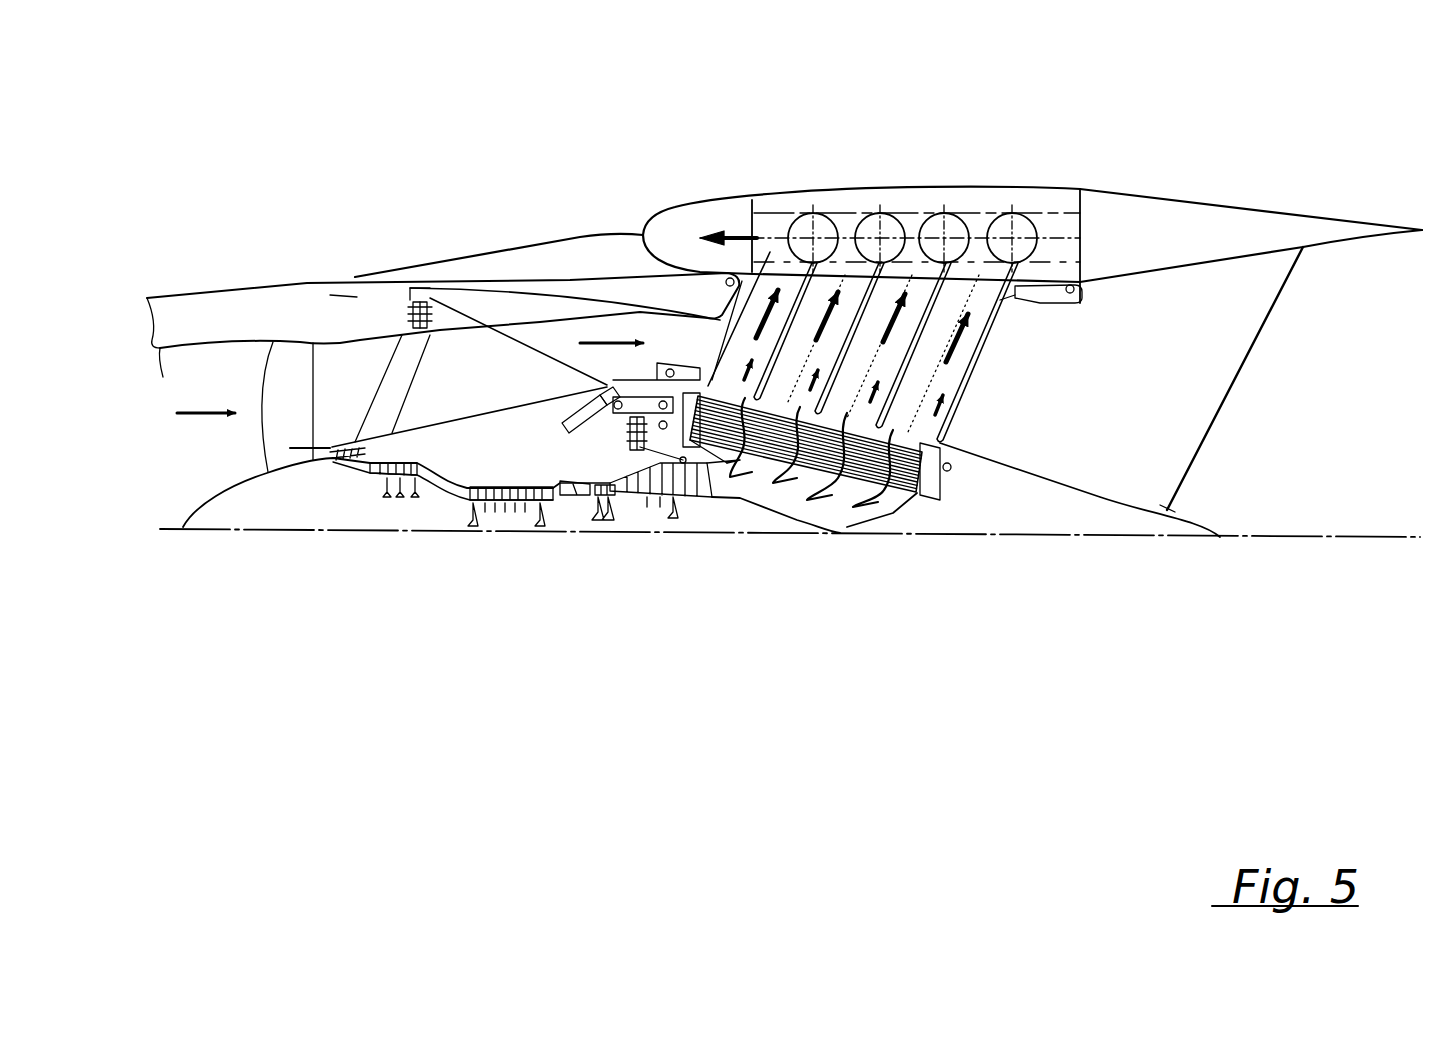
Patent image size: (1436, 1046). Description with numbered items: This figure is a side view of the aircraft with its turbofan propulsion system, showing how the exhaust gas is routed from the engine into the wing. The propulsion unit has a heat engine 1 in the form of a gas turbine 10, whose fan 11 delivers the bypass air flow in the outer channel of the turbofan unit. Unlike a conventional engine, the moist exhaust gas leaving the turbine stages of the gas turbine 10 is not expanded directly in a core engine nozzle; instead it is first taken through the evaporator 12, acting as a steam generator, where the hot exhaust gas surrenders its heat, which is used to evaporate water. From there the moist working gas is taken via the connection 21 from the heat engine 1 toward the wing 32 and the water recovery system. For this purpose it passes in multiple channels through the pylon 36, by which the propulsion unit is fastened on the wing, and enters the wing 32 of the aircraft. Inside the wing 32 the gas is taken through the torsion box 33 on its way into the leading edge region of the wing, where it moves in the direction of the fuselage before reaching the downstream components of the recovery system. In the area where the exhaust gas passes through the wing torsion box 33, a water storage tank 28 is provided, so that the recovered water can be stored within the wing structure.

The heat engine 1 is at (372, 195).
The gas turbine 10 is at (530, 568).
The fan 11 is at (287, 367).
The evaporator 12 is at (817, 455).
The connection 21 is at (692, 225).
The water storage tank 28 is at (1035, 205).
The wing 32 is at (1185, 196).
The torsion box 33 is at (808, 192).
The pylon 36 is at (1117, 425).